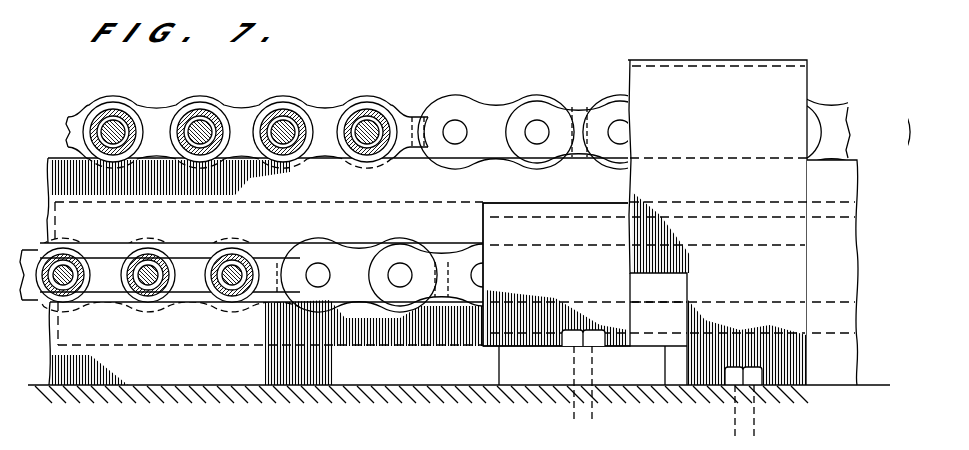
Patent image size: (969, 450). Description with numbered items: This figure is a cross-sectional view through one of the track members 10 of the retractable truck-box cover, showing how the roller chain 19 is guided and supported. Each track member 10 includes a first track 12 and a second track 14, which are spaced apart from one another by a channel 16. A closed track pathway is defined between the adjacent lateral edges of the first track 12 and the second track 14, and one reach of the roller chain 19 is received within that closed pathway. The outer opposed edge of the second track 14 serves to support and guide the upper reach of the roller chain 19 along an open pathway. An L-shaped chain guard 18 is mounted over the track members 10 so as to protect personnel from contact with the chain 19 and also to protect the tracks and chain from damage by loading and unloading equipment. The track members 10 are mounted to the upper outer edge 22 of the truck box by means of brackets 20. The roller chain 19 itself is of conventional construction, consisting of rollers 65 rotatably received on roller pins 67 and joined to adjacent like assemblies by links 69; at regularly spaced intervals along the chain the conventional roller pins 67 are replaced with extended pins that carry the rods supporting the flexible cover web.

The track members 10 is at (605, 70).
The first track 12 is at (266, 343).
The second track 14 is at (334, 271).
The channel 16 is at (670, 311).
The L-shaped chain guard 18 is at (680, 62).
The roller chain 19 is at (478, 95).
The brackets 20 is at (650, 372).
The upper outer edge 22 is at (427, 385).
The rollers 65 is at (181, 118).
The roller pins 67 is at (110, 121).
The links 69 is at (385, 103).